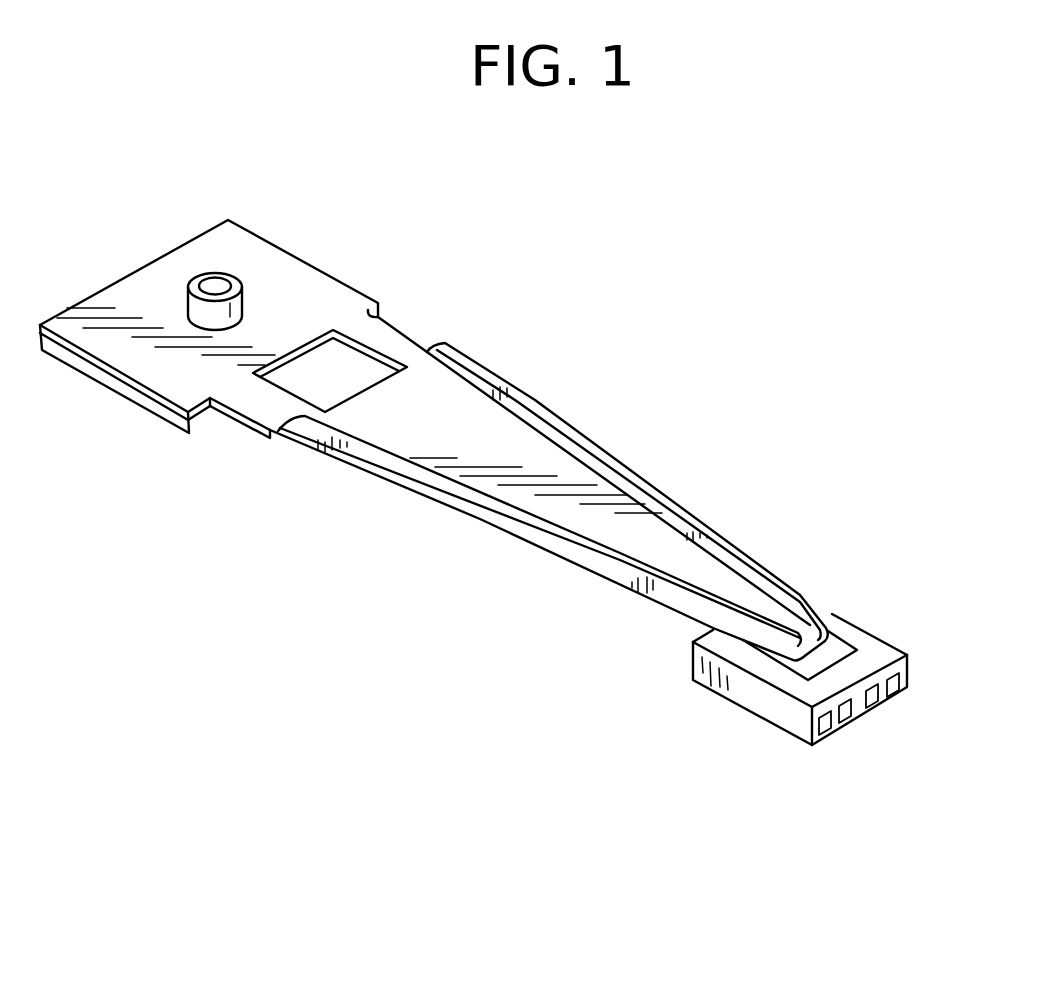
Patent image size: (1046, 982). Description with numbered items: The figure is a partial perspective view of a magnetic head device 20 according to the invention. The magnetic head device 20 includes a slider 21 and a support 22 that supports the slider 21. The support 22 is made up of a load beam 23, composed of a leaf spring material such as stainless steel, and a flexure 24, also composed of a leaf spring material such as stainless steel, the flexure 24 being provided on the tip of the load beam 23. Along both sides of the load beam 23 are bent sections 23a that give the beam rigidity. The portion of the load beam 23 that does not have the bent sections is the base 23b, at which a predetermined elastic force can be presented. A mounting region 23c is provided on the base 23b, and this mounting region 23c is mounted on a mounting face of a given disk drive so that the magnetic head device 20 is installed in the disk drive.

The magnetic head device 20 is at (624, 334).
The slider 21 is at (785, 708).
The support 22 is at (948, 586).
The load beam 23 is at (731, 590).
The bent sections 23a is at (577, 443).
The base 23b is at (382, 338).
The mounting region 23c is at (282, 284).
The flexure 24 is at (842, 640).